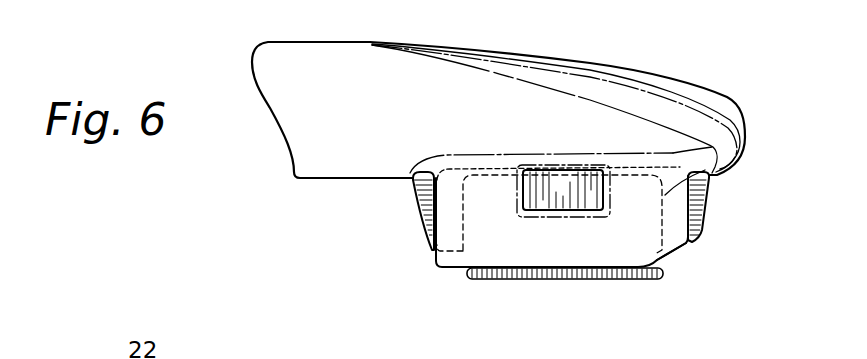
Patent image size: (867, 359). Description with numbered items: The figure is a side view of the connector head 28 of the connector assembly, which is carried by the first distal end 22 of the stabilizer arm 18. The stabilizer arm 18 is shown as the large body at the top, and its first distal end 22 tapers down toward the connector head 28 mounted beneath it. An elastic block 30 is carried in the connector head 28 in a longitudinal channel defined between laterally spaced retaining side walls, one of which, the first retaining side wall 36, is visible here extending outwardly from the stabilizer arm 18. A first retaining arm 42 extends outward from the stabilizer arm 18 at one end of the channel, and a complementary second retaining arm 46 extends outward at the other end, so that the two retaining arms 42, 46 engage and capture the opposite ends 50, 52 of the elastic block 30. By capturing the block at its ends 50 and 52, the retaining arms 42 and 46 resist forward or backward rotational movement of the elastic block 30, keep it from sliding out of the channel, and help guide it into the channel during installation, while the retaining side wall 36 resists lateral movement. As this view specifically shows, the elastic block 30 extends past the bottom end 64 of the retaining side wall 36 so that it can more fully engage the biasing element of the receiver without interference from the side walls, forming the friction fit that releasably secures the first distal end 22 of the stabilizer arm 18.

The stabilizer arm 18 is at (262, 50).
The first distal end 22 is at (610, 65).
The connector head 28 is at (685, 258).
The elastic block 30 is at (603, 273).
The first retaining side wall 36 is at (497, 250).
The first retaining arm 42 is at (697, 195).
The second retaining arm 46 is at (414, 187).
The end of elastic block 50 is at (672, 182).
The end of elastic block 52 is at (458, 214).
The bottom end 64 is at (508, 276).